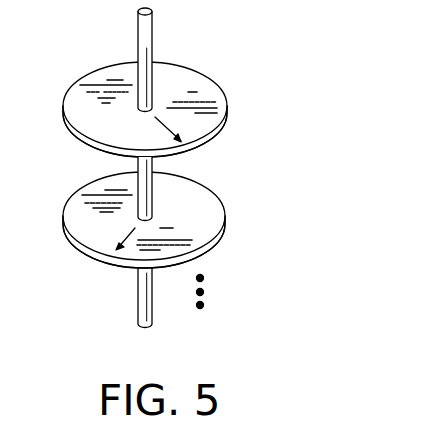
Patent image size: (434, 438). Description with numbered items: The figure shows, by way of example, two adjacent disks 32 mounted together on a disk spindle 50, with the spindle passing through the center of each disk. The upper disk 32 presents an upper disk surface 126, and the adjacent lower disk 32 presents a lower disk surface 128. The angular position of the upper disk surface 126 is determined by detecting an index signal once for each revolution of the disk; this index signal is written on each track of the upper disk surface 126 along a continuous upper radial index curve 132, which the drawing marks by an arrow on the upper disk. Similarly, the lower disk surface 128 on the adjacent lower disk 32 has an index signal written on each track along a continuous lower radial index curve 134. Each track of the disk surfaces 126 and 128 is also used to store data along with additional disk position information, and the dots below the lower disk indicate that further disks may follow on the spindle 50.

The disk spindle 50 is at (148, 25).
The upper disk surface 126 is at (211, 97).
The lower disk surface 128 is at (219, 218).
The disk 32 is at (226, 113).
The upper radial index curve 132 is at (184, 142).
The lower radial index curve 134 is at (116, 250).